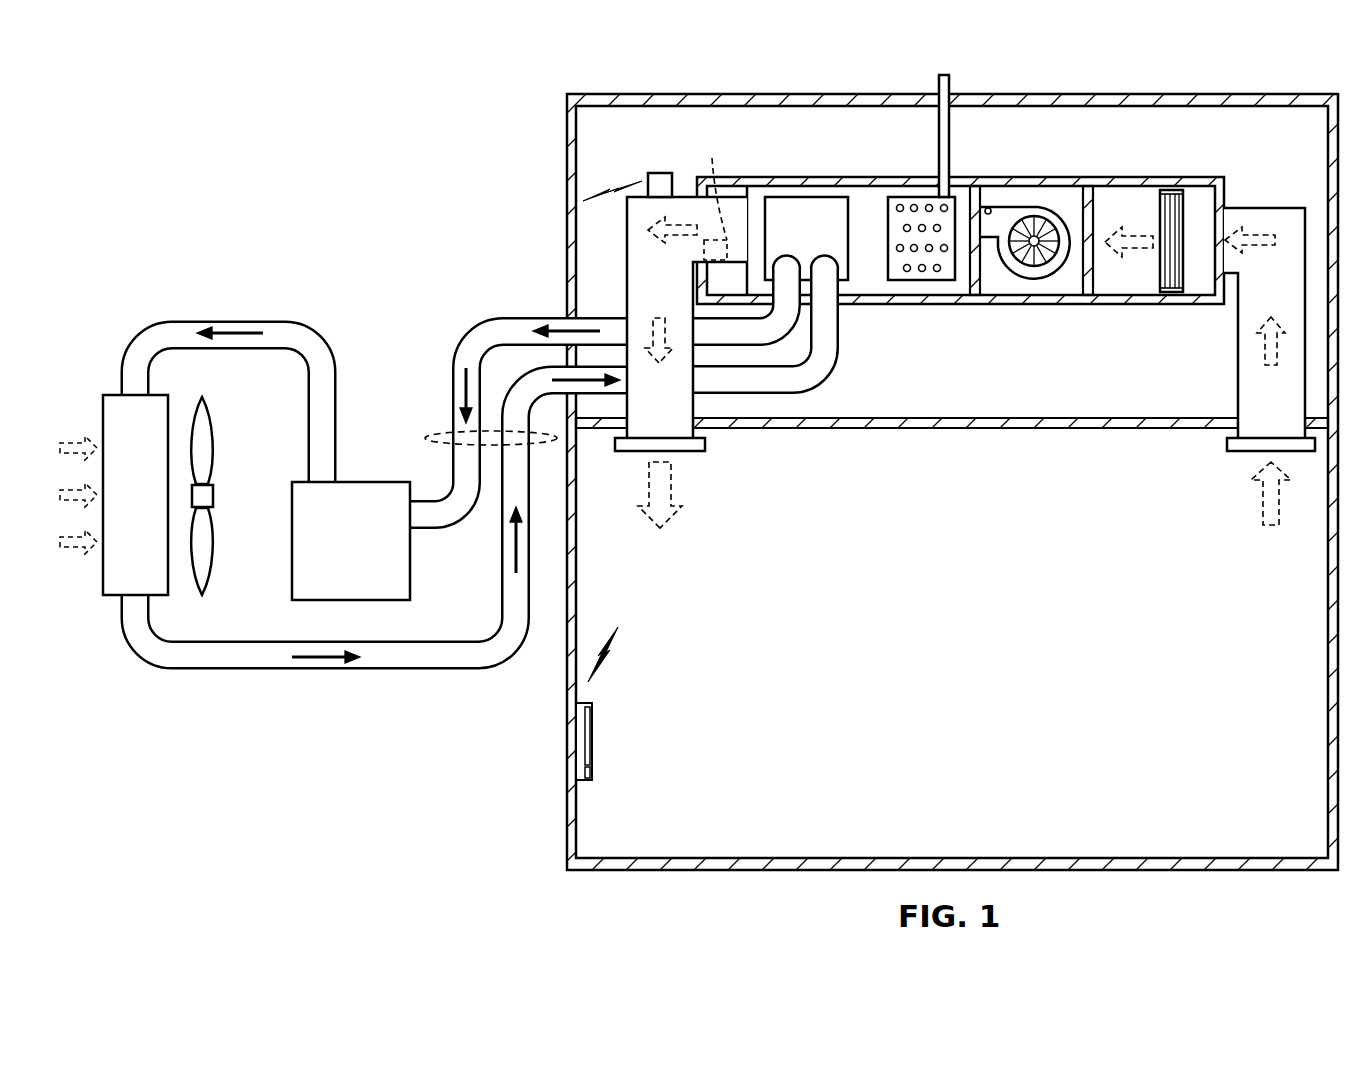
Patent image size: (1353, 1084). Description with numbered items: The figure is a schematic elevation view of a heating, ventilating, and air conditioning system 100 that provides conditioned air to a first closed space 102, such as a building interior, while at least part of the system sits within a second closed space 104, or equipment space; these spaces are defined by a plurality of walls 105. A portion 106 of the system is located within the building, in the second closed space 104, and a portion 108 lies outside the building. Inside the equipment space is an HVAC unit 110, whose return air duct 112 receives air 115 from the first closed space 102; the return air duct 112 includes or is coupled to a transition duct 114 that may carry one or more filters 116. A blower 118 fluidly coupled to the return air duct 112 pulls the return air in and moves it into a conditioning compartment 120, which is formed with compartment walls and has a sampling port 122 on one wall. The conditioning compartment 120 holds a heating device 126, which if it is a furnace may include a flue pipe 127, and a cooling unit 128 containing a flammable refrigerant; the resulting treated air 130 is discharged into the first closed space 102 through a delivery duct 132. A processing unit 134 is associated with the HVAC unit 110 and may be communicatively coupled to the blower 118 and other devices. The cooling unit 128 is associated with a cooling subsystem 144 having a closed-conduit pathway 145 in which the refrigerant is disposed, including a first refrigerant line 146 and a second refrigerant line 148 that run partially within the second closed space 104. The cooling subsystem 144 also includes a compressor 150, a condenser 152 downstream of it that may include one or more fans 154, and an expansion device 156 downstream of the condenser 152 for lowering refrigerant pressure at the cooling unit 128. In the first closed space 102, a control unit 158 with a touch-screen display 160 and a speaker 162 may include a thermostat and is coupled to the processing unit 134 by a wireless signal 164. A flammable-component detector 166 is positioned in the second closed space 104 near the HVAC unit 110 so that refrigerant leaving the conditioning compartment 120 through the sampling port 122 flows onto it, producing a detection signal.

The HVAC system 100 is at (1150, 308).
The first closed space 102 is at (950, 659).
The second closed space 104 is at (582, 224).
The walls 105 is at (1328, 685).
The portion of the system located within the building 106 is at (1046, 308).
The portion of the system outside the building 108 is at (166, 250).
The HVAC unit 110 is at (947, 308).
The return air duct 112 is at (1258, 208).
The transition duct 114 is at (1133, 194).
The air 115 is at (1252, 492).
The filters 116 is at (1180, 198).
The blower 118 is at (1072, 194).
The conditioning compartment 120 is at (912, 304).
The sampling port 122 is at (711, 184).
The heating device 126 is at (905, 197).
The flue pipe 127 is at (952, 152).
The cooling unit 128 is at (773, 197).
The treated air 130 is at (675, 516).
The delivery duct 132 is at (690, 452).
The processing unit 134 is at (660, 173).
The cooling subsystem 144 is at (148, 322).
The closed-conduit pathway 145 is at (230, 321).
The first refrigerant line 146 is at (502, 592).
The second refrigerant line 148 is at (452, 372).
The compressor 150 is at (370, 558).
The condenser 152 is at (104, 400).
The fans 154 is at (213, 428).
The expansion device 156 is at (826, 253).
The control unit 158 is at (598, 706).
The touch-screen display 160 is at (594, 735).
The speaker 162 is at (594, 774).
The wireless signal 164 is at (622, 188).
The flammable-component detector 166 is at (707, 280).